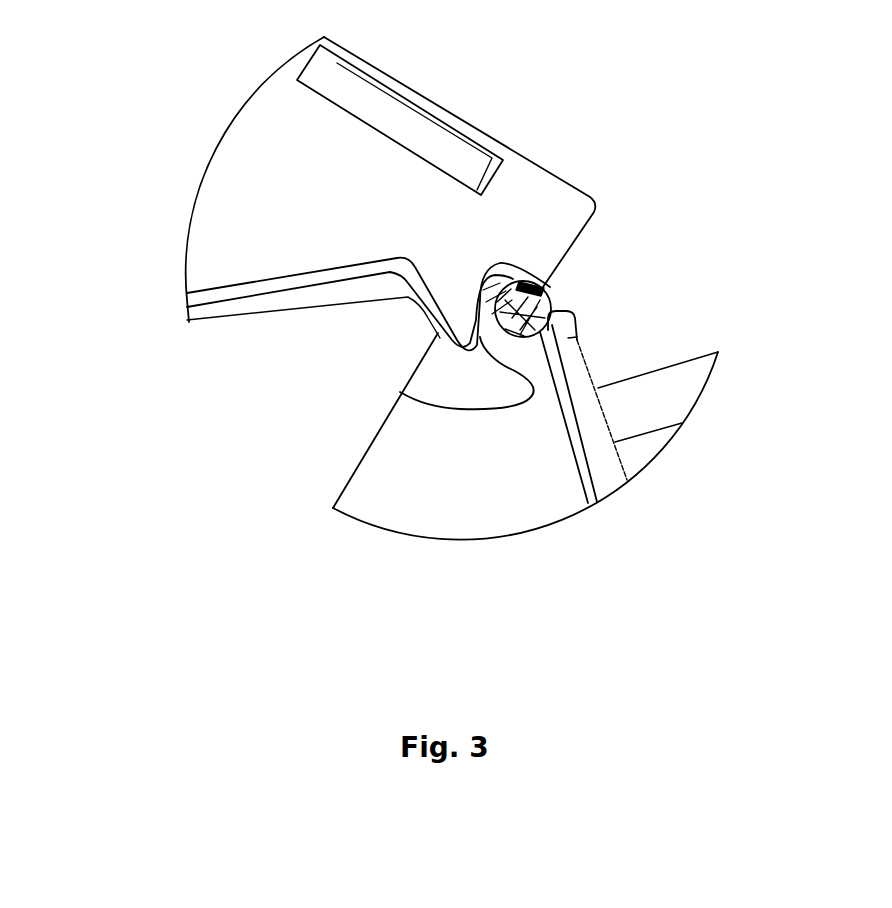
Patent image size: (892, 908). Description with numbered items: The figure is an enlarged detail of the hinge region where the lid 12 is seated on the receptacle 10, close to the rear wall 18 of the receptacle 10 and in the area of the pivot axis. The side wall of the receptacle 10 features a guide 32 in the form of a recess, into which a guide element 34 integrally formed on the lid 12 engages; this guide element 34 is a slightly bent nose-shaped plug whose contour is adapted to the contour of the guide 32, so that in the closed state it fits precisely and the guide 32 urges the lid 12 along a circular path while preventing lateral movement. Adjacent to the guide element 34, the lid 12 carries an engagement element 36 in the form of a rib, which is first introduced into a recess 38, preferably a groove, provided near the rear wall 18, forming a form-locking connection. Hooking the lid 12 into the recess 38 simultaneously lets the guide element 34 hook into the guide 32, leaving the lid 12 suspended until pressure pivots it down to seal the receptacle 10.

The receptacle 10 is at (508, 510).
The lid 12 is at (243, 168).
The rear wall 18 is at (580, 362).
The guide 32 is at (427, 375).
The guide element 34 is at (440, 293).
The engagement element 36 is at (553, 290).
The recess 38 is at (530, 313).